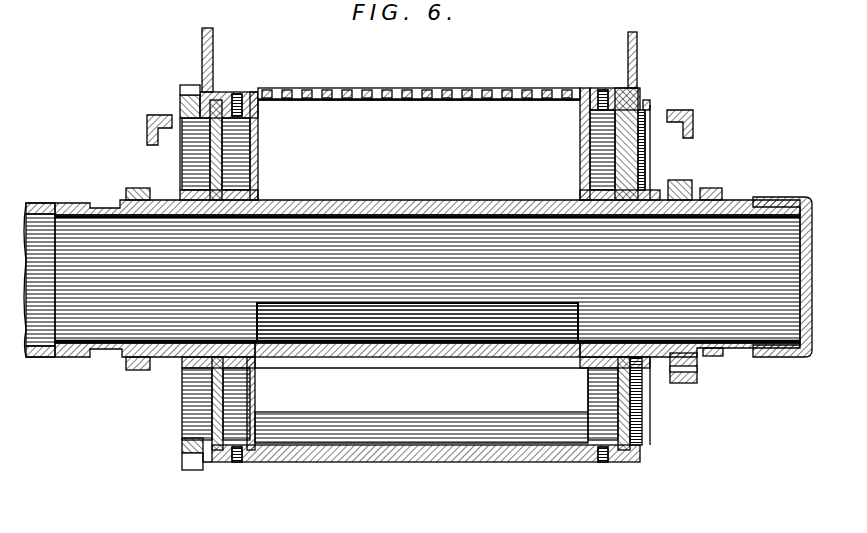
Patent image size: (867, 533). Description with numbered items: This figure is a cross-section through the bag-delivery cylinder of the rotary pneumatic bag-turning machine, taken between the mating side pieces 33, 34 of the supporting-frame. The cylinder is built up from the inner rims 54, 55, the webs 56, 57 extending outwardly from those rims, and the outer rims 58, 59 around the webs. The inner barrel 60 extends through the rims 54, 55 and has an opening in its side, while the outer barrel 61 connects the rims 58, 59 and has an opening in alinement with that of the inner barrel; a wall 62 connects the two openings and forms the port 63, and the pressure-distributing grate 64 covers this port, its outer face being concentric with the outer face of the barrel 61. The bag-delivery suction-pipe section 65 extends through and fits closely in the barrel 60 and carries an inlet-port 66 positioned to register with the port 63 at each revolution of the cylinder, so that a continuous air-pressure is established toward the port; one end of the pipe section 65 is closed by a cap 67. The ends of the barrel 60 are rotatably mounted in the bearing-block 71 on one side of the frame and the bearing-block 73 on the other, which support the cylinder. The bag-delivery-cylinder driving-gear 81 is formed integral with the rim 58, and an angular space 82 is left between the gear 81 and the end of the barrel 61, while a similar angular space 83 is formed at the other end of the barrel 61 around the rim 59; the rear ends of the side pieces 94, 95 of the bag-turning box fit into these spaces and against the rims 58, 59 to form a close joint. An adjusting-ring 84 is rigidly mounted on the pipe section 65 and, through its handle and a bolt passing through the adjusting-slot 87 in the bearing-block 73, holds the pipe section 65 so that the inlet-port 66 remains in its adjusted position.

The side piece 33 is at (147, 128).
The side piece 34 is at (694, 115).
The inner rim 54 is at (258, 192).
The inner rim 55 is at (582, 192).
The web 56 is at (205, 165).
The web 57 is at (646, 163).
The outer rim 58 is at (183, 112).
The outer rim 59 is at (650, 107).
The inner barrel 60 is at (386, 358).
The outer barrel 61 is at (368, 463).
The wall 62 is at (579, 163).
The port 63 is at (420, 180).
The pressure-distributing grate 64 is at (433, 91).
The bag-delivery suction-pipe section 65 is at (736, 198).
The inlet-port 66 is at (455, 306).
The cap 67 is at (781, 198).
The bearing-block 71 is at (135, 192).
The bearing-block 73 is at (698, 366).
The bag-delivery-cylinder driving-gear 81 is at (195, 90).
The angular space 82 is at (208, 457).
The angular space 83 is at (631, 455).
The adjusting-ring 84 is at (708, 190).
The adjusting-slot 87 is at (672, 373).
The side piece 94 is at (214, 50).
The side piece 95 is at (637, 55).